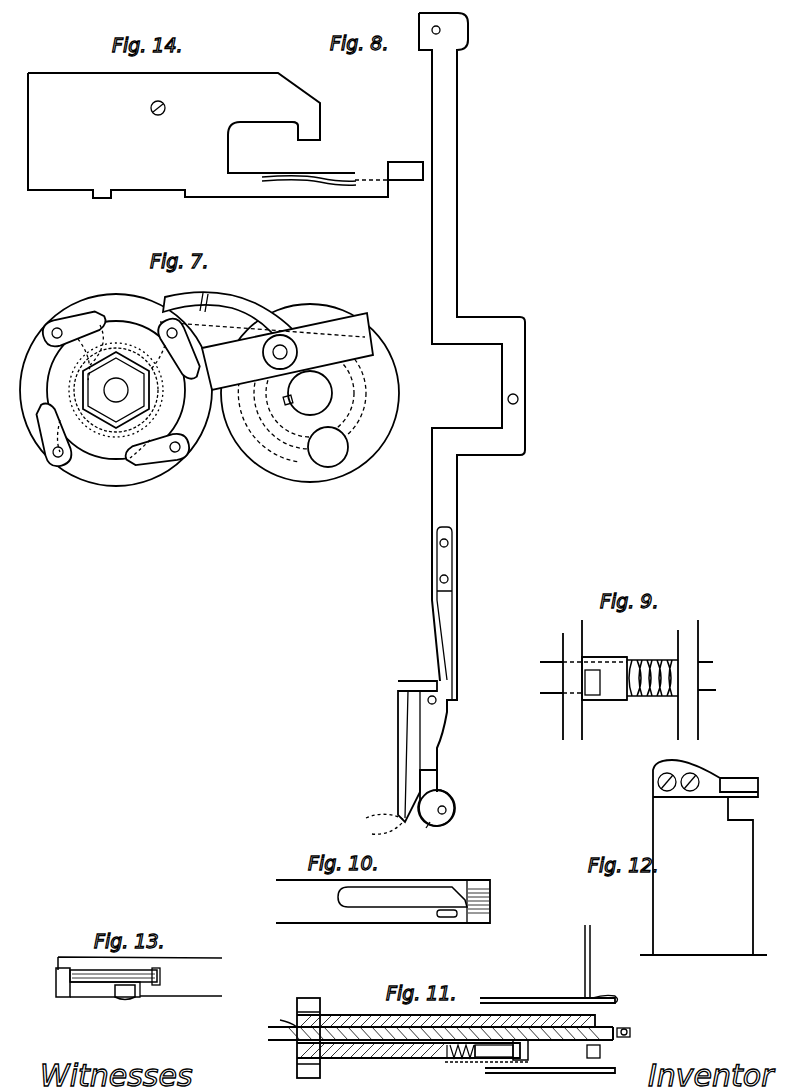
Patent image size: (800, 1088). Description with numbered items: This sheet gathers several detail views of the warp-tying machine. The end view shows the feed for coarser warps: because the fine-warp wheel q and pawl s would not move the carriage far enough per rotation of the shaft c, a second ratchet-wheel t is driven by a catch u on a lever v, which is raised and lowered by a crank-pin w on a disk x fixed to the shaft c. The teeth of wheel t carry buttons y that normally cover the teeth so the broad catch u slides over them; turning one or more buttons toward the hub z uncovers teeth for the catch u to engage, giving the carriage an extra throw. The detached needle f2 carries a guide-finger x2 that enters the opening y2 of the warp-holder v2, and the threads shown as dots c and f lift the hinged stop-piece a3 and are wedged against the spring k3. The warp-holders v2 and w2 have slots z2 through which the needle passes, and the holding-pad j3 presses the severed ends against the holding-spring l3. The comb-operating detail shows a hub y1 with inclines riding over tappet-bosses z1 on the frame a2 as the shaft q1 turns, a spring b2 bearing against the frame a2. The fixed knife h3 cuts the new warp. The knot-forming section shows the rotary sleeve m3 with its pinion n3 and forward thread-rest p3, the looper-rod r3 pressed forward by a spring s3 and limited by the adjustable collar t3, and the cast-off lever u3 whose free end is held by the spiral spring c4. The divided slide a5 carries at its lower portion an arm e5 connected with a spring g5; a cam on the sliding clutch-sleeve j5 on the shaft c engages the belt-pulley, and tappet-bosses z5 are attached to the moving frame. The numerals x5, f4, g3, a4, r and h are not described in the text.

In FIG. 14, the divided slide a5 is at (158, 120).
In FIG. 14, the tappet-bosses z5 is at (303, 129).
In FIG. 14, the spring g5 is at (309, 169).
In FIG. 14, the lug x5 is at (405, 162).
In FIG. 14, the arm e5 is at (241, 184).
In FIG. 14, the sliding clutch-sleeve j5 is at (377, 188).
In FIG. 8, the needle f2 is at (440, 165).
In FIG. 8, the guide-finger x2 is at (478, 634).
In FIG. 8, the spring k3 is at (410, 753).
In FIG. 8, the shaft c is at (379, 819).
In FIG. 7, the shaft c is at (307, 393).
In FIG. 8, the thread f is at (383, 831).
In FIG. 8, the hinged stop-piece a3 is at (423, 833).
In FIG. 7, the second ratchet-wheel t is at (116, 390).
In FIG. 7, the disk x is at (310, 393).
In FIG. 7, the catch u is at (232, 321).
In FIG. 7, the pawl s is at (266, 351).
In FIG. 7, the lever v is at (285, 350).
In FIG. 7, the crank-pin w is at (328, 447).
In FIG. 7, the hub z is at (116, 390).
In FIG. 7, the hexagonal nut r is at (116, 378).
In FIG. 7, the shaft h is at (116, 390).
In FIG. 7, the wheel q is at (74, 358).
In FIG. 7, the buttons y is at (118, 387).
In FIG. 9, the frame a2 is at (572, 680).
In FIG. 9, the shaft q1 is at (583, 677).
In FIG. 9, the tappet-bosses z1 is at (604, 667).
In FIG. 9, the hub y1 is at (604, 666).
In FIG. 9, the spring b2 is at (671, 680).
In FIG. 12, the fixed knife h3 is at (664, 776).
In FIG. 10, the warp-holder v2 is at (383, 901).
In FIG. 11, the warp-holder v2 is at (547, 989).
In FIG. 10, the slot z2 is at (402, 897).
In FIG. 10, the holding-pad j3 is at (492, 903).
In FIG. 11, the holding-pad j3 is at (612, 996).
In FIG. 10, the opening y2 is at (448, 919).
In FIG. 13, the rotary sleeve m3 is at (130, 970).
In FIG. 11, the rotary sleeve m3 is at (446, 1044).
In FIG. 13, the looper-rod r3 is at (98, 990).
In FIG. 11, the looper-rod r3 is at (487, 1059).
In FIG. 13, the spiral spring c4 is at (115, 990).
In FIG. 11, the thread-rest p3 is at (598, 1027).
In FIG. 11, the pinion n3 is at (308, 1029).
In FIG. 11, the rod end f4 is at (282, 1015).
In FIG. 11, the spring s3 is at (461, 1059).
In FIG. 11, the adjustable collar t3 is at (520, 1050).
In FIG. 11, the block g3 is at (601, 1050).
In FIG. 11, the cast-off lever u3 is at (631, 1034).
In FIG. 11, the pin head a4 is at (629, 1025).
In FIG. 11, the warp-holder w2 is at (550, 1063).
In FIG. 11, the holding-spring l3 is at (576, 961).